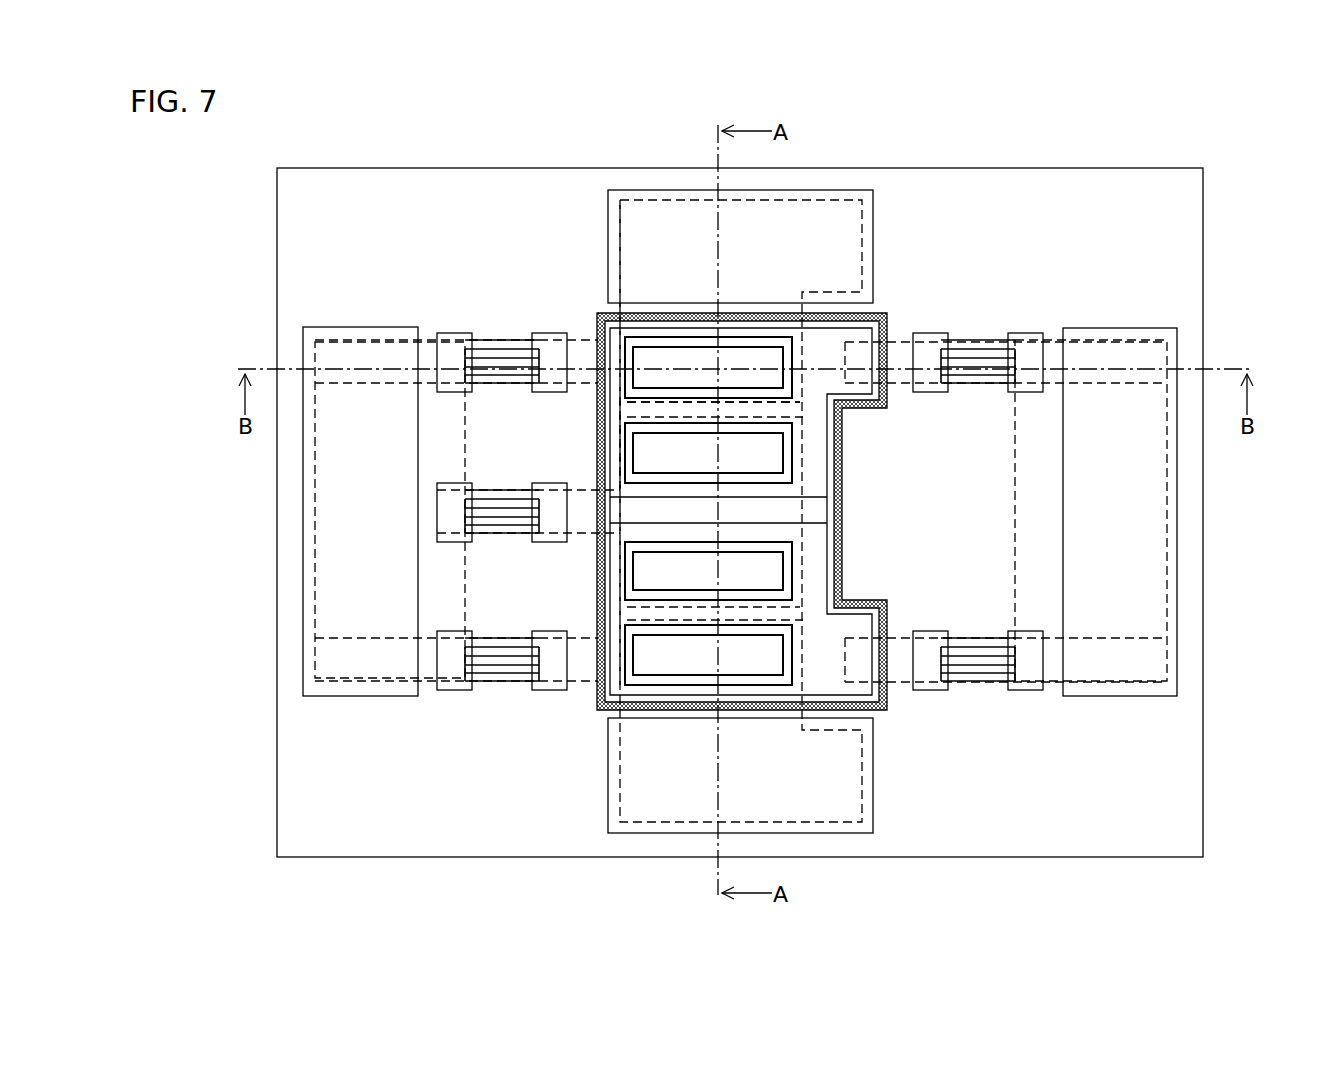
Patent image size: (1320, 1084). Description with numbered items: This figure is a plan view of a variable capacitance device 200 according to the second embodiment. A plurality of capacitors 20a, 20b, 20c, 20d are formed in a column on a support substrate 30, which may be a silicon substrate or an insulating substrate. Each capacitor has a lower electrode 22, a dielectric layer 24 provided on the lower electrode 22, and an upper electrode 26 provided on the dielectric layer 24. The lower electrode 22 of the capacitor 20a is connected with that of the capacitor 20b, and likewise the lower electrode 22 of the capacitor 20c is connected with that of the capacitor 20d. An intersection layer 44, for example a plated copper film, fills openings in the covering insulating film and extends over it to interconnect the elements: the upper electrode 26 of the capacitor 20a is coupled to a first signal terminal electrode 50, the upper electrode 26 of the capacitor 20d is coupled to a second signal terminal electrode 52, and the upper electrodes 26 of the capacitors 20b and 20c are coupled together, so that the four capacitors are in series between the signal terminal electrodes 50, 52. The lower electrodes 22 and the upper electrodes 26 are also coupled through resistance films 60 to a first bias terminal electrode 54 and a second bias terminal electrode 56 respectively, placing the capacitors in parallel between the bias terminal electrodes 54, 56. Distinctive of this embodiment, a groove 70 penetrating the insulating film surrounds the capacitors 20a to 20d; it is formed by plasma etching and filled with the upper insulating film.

The variable capacitance device 200 is at (1184, 157).
The support substrate 30 is at (1204, 218).
The first signal terminal electrode 50 is at (874, 232).
The second signal terminal electrode 52 is at (874, 760).
The first bias terminal electrode 54 is at (1114, 328).
The second bias terminal electrode 56 is at (360, 327).
The intersection layer 44 is at (428, 333).
The resistance film 60 is at (503, 333).
The groove 70 is at (886, 398).
The upper electrode 26 is at (658, 375).
The dielectric layer 24 is at (650, 392).
The lower electrode 22 is at (620, 455).
The capacitor 20a is at (729, 412).
The capacitor 20b is at (797, 470).
The capacitor 20c is at (797, 556).
The capacitor 20d is at (796, 626).